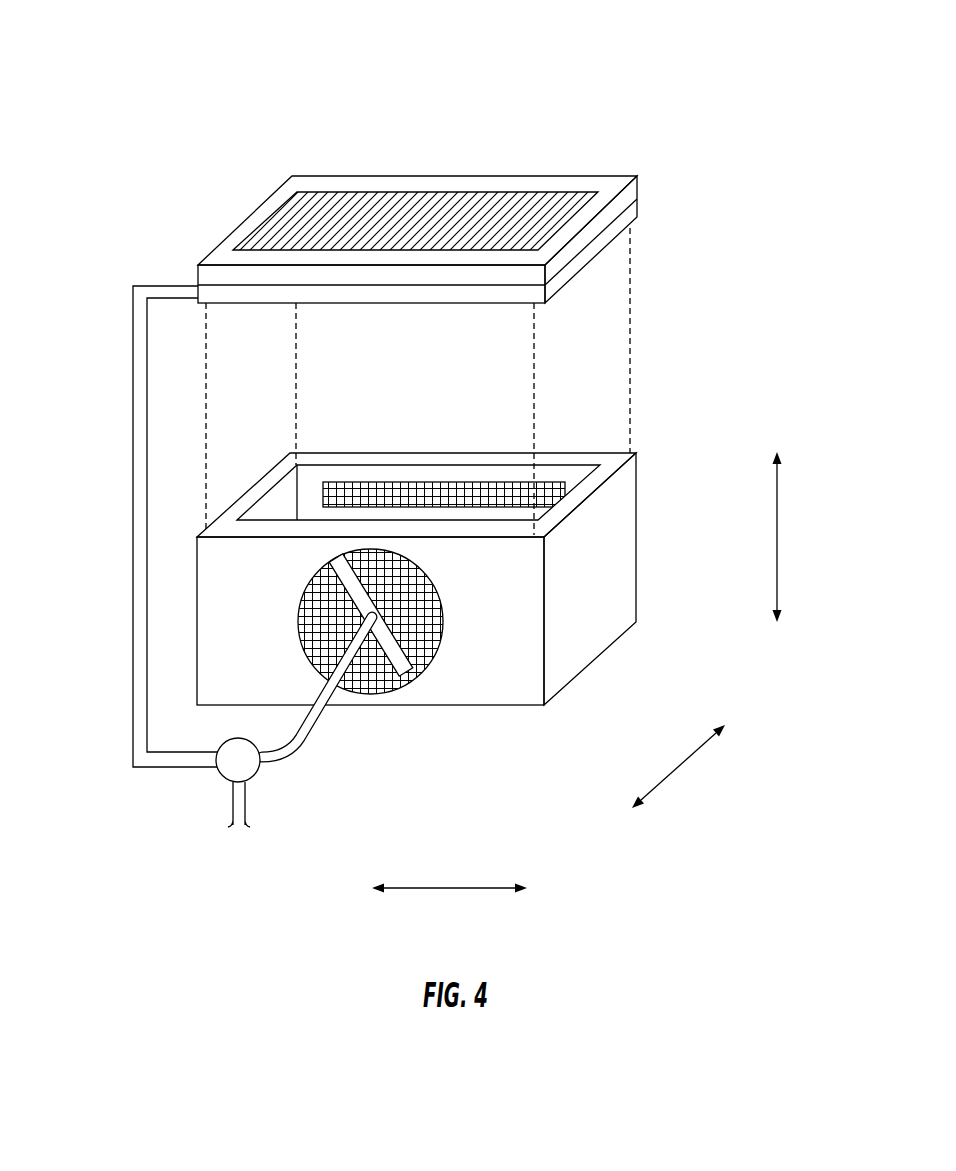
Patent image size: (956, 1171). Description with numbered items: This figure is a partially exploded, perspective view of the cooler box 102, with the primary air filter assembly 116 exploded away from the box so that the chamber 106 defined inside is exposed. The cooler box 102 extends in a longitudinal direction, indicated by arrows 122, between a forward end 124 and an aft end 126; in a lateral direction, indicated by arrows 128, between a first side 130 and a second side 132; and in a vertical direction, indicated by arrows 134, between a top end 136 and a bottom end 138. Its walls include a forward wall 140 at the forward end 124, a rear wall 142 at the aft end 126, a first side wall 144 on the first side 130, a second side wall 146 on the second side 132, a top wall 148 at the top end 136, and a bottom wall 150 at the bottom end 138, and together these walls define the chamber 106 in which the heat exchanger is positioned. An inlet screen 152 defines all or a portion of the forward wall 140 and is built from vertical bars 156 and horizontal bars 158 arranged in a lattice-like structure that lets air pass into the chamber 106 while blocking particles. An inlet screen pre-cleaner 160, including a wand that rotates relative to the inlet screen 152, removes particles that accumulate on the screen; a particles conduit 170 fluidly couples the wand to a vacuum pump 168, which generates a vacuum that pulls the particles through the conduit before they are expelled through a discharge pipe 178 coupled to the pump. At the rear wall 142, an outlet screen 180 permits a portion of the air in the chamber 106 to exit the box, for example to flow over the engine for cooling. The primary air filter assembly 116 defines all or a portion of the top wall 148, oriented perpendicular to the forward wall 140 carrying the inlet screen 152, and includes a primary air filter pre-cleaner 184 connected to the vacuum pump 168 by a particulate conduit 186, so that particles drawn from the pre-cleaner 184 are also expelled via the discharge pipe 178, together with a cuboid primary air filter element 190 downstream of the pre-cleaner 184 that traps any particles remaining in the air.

The cooler box 102 is at (138, 72).
The chamber 106 is at (288, 487).
The primary air filter assembly 116 is at (680, 220).
The longitudinal direction arrows 122 is at (662, 783).
The forward end 124 is at (398, 718).
The aft end 126 is at (692, 517).
The lateral direction arrows 128 is at (445, 890).
The first side 130 is at (607, 693).
The second side 132 is at (118, 538).
The vertical direction arrows 134 is at (777, 545).
The top end 136 is at (452, 145).
The bottom end 138 is at (658, 665).
The forward wall 140 is at (483, 680).
The rear wall 142 is at (572, 450).
The first side wall 144 is at (628, 585).
The second side wall 146 is at (260, 488).
The top wall 148 is at (338, 170).
The bottom wall 150 is at (513, 708).
The inlet screen 152 is at (445, 597).
The vertical bars 156 is at (410, 583).
The horizontal bars 158 is at (413, 640).
The inlet screen pre-cleaner 160 is at (337, 592).
The vacuum pump 168 is at (245, 765).
The particles conduit 170 is at (310, 745).
The discharge pipe 178 is at (228, 805).
The outlet screen 180 is at (415, 492).
The primary air filter pre-cleaner 184 is at (452, 305).
The particulate conduit 186 is at (142, 593).
The primary air filter element 190 is at (543, 195).